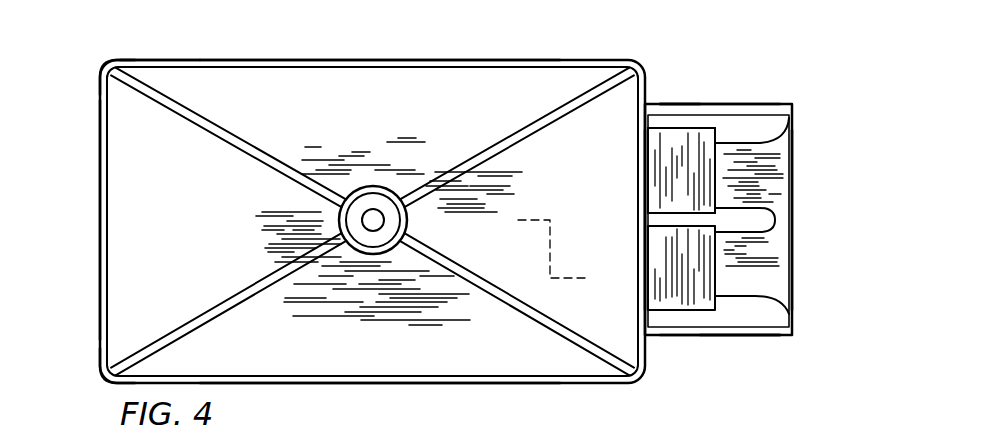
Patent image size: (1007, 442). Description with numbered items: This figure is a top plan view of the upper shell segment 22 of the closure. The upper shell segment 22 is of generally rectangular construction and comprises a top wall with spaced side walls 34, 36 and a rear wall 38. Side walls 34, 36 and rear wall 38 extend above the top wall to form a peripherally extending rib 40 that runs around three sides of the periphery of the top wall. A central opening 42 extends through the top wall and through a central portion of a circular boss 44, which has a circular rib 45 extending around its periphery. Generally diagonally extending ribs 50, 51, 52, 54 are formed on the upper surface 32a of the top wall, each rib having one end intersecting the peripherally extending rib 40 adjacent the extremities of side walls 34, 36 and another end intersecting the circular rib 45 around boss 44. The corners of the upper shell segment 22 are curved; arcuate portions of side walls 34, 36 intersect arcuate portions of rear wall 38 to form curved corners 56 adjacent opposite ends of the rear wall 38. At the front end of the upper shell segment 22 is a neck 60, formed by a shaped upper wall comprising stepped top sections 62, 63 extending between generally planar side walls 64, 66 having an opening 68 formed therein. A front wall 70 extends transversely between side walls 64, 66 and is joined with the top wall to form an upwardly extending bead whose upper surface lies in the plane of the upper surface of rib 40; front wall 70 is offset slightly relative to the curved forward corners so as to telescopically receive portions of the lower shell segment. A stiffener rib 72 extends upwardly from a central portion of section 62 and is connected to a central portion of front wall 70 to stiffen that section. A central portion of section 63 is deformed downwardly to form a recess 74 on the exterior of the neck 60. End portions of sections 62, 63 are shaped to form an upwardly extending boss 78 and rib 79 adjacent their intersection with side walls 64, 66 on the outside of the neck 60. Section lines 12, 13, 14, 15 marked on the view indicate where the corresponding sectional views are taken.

The section line 12- 12 is at (95, 221).
The section line 13- 13 is at (622, 22).
The section line 14- 14 is at (678, 102).
The section line 15- 15 is at (752, 102).
The upper shell segment 22 is at (490, 57).
The upper surface of top wall 32a is at (352, 51).
The side wall 34 is at (428, 60).
The side wall 36 is at (496, 383).
The rear wall 38 is at (98, 151).
The peripherally extending rib 40 is at (165, 60).
The central opening 42 is at (373, 212).
The circular boss 44 is at (398, 212).
The circular rib 45 is at (333, 222).
The diagonally extending rib 50 is at (213, 318).
The diagonally extending rib 51 is at (205, 117).
The diagonally extending rib 52 is at (518, 132).
The diagonally extending rib 54 is at (556, 322).
The curved corner 56 is at (104, 64).
The neck 60 is at (766, 82).
The stepped top section 62 is at (668, 152).
The stepped top section 63 is at (793, 163).
The side wall of neck 64 is at (795, 105).
The side wall of neck 66 is at (782, 336).
The opening 68 is at (676, 112).
The front wall 70 is at (650, 195).
The stiffener rib 72 is at (703, 223).
The recess 74 is at (757, 225).
The boss 78 is at (744, 130).
The rib 79 is at (768, 103).